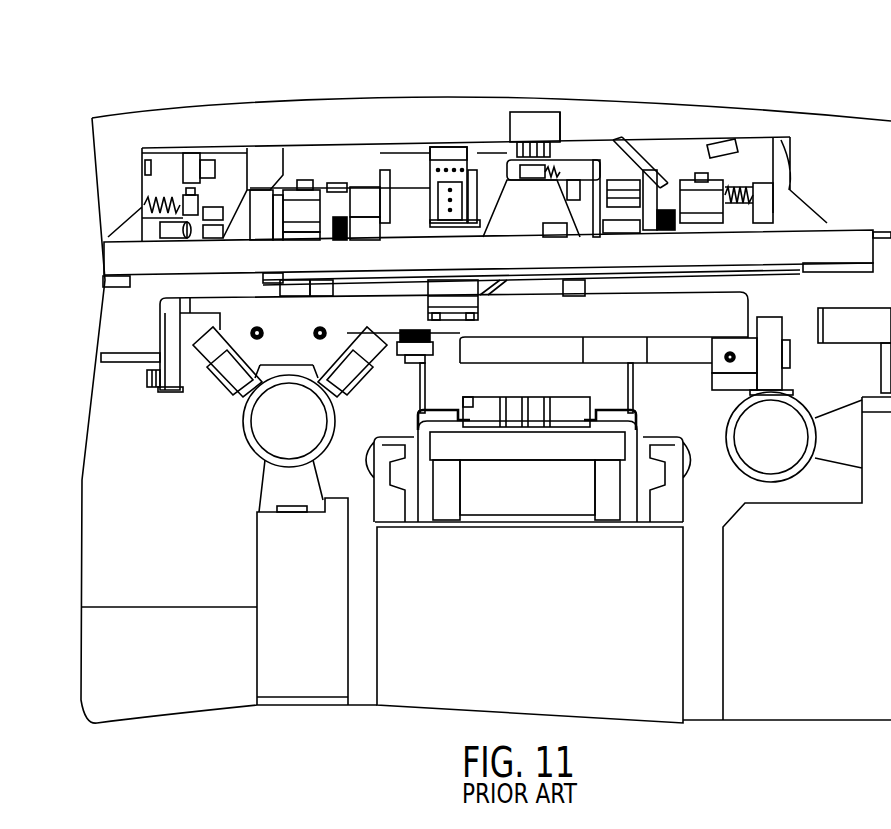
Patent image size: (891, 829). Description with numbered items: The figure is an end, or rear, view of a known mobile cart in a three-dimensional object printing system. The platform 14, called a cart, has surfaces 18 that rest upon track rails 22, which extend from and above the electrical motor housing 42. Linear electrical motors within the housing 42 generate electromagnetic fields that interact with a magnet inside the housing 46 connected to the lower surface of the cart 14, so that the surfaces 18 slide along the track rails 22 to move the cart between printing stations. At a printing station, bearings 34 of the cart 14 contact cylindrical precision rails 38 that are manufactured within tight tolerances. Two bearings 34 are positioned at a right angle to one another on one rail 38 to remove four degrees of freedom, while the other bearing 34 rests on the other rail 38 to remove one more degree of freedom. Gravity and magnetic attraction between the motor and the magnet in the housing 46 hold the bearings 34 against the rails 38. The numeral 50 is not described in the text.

The platform 14 is at (750, 291).
The surfaces 18 is at (440, 413).
The track rails 22 is at (380, 489).
The bearings 34 is at (227, 363).
The precision rails 38 is at (247, 440).
The housing 42 is at (417, 688).
The housing 46 is at (488, 495).
The cartridge bottom edge 50 is at (524, 531).